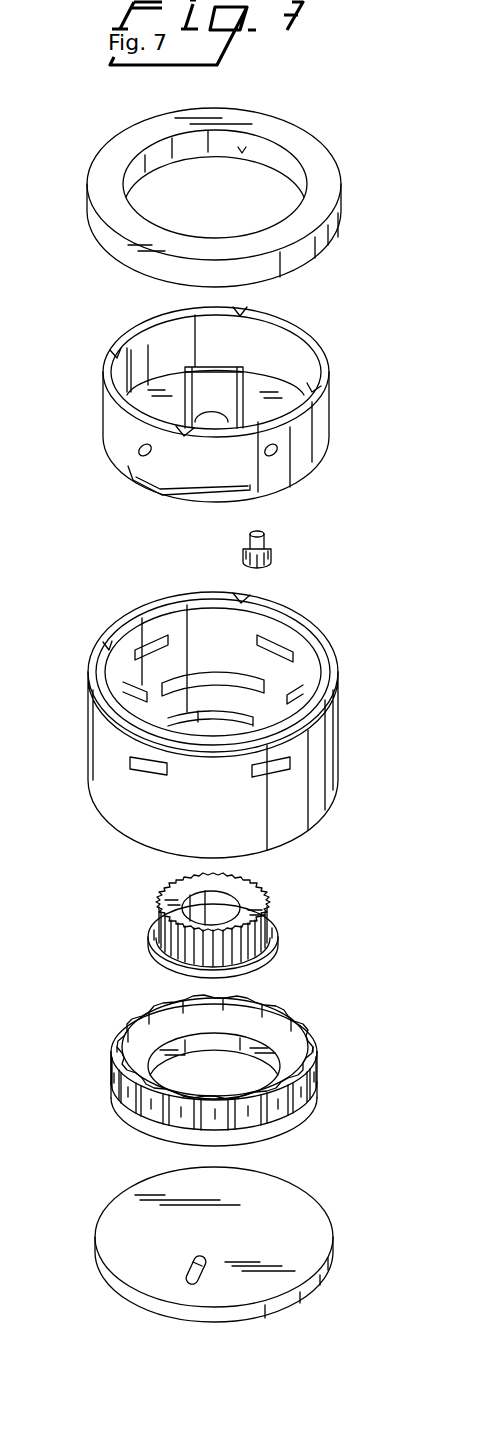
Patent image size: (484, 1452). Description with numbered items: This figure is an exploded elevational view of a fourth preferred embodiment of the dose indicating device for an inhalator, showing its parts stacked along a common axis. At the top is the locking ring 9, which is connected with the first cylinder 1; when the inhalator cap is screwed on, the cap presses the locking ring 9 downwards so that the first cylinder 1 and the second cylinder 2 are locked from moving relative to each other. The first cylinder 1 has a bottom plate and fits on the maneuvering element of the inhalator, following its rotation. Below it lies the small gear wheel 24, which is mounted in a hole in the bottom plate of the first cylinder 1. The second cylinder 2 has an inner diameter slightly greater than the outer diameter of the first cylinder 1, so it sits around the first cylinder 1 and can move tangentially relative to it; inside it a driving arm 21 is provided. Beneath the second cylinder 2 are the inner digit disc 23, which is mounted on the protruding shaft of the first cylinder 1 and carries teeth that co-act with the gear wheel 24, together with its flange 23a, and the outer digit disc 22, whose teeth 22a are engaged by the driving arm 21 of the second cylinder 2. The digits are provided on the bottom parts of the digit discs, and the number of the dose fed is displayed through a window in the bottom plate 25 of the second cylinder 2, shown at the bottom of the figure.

The locking ring 9 is at (292, 116).
The first cylinder 1 is at (303, 323).
The gear wheel 24 is at (243, 546).
The second cylinder 2 is at (308, 612).
The driving arm 21 is at (175, 682).
The inner digit disc 23 is at (157, 905).
The gear flange 23a is at (275, 948).
The outer digit disc 22 is at (135, 1013).
The teeth 22a is at (303, 1036).
The bottom plate 25 is at (108, 1188).